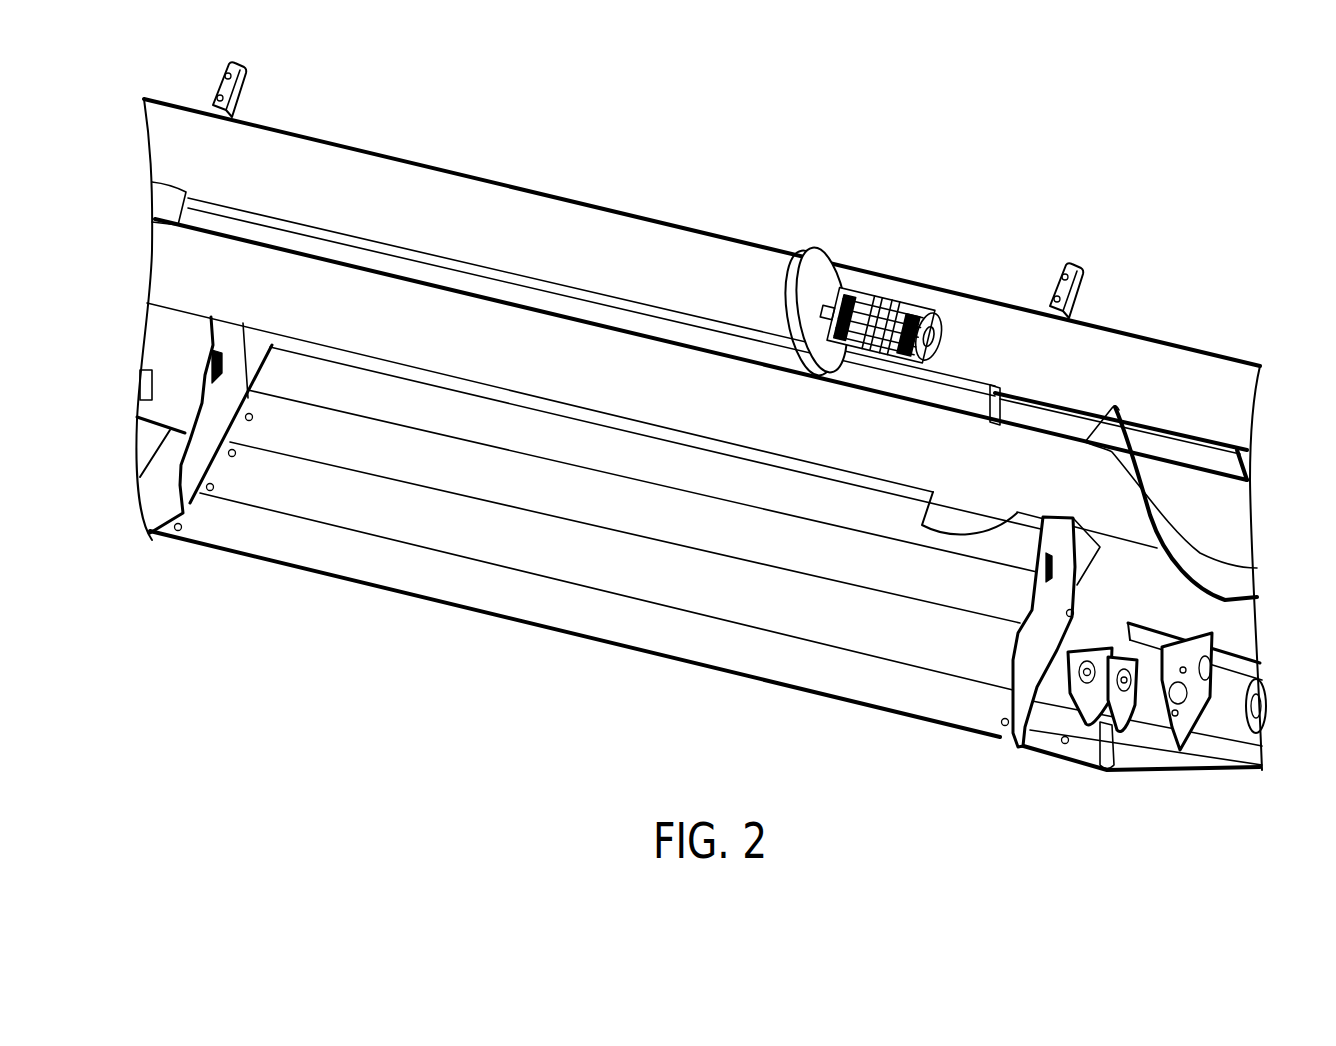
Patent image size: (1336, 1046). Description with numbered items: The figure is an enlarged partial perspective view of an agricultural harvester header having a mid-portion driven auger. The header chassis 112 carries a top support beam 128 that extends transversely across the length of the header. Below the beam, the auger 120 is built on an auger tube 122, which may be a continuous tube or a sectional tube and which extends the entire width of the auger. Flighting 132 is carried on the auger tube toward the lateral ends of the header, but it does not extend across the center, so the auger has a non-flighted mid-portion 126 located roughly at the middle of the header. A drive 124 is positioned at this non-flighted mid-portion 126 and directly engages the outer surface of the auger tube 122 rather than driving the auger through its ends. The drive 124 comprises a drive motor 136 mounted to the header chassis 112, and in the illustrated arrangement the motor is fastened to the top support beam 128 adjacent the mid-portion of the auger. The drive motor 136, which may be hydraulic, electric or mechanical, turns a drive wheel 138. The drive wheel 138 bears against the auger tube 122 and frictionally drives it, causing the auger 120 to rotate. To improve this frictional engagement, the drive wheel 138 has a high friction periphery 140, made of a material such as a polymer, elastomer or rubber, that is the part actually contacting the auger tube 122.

The header chassis 112 is at (1211, 353).
The auger 120 is at (876, 499).
The auger tube 122 is at (443, 357).
The drive 124 is at (591, 240).
The non-flighted mid-portion 126 is at (763, 446).
The top support beam 128 is at (1088, 345).
The flighting 132 is at (1175, 584).
The drive motor 136 is at (921, 308).
The drive wheel 138 is at (835, 268).
The high friction periphery 140 is at (797, 338).